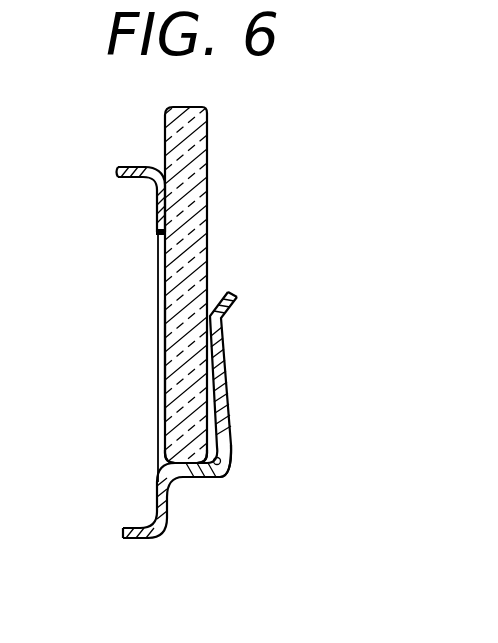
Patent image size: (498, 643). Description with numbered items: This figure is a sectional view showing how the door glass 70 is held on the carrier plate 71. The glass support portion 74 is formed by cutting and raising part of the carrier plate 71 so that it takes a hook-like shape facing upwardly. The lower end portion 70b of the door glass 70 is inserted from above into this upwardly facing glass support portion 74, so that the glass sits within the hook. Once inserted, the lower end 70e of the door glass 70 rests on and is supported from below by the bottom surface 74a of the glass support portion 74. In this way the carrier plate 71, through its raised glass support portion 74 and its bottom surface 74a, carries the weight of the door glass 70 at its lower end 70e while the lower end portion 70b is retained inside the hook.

The door glass 70 is at (208, 248).
The lower end portion of the door glass 70b is at (178, 383).
The lower end of the door glass 70e is at (165, 471).
The carrier plate 71 is at (157, 212).
The glass support portion 74 is at (227, 368).
The bottom surface of the glass support portion 74a is at (230, 466).